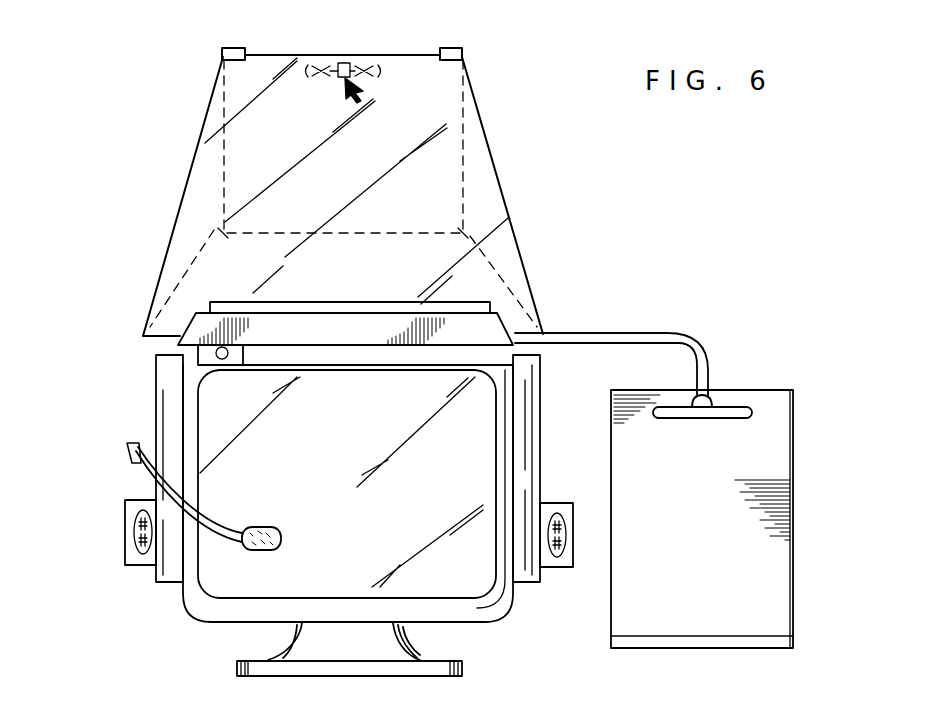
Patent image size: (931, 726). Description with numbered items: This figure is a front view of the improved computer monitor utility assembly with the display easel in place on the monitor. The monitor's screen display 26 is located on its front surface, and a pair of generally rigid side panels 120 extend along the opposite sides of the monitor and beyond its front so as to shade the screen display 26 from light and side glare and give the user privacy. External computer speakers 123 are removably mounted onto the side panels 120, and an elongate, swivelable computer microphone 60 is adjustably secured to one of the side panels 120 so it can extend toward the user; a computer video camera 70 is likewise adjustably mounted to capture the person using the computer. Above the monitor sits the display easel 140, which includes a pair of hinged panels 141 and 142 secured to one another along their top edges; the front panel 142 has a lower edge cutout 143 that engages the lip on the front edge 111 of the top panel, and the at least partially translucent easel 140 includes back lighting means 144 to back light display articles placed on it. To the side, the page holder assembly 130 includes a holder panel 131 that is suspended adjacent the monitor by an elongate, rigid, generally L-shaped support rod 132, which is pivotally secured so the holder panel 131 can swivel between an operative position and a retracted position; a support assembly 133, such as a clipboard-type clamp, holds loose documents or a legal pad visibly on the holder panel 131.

The screen display 26 is at (312, 484).
The computer microphone 60 is at (212, 545).
The computer video camera 70 is at (200, 357).
The front edge 111 is at (490, 325).
The side panels 120 is at (157, 400).
The external computer speakers 123 is at (125, 513).
The page holder assembly 130 is at (765, 385).
The holder panel 131 is at (712, 568).
The support rod 132 is at (632, 332).
The support assembly 133 is at (690, 418).
The display easel 140 is at (486, 100).
The hinged panel 141 is at (463, 152).
The front panel 142 is at (503, 192).
The lower edge cutout 143 is at (312, 302).
The back lighting means 144 is at (370, 97).